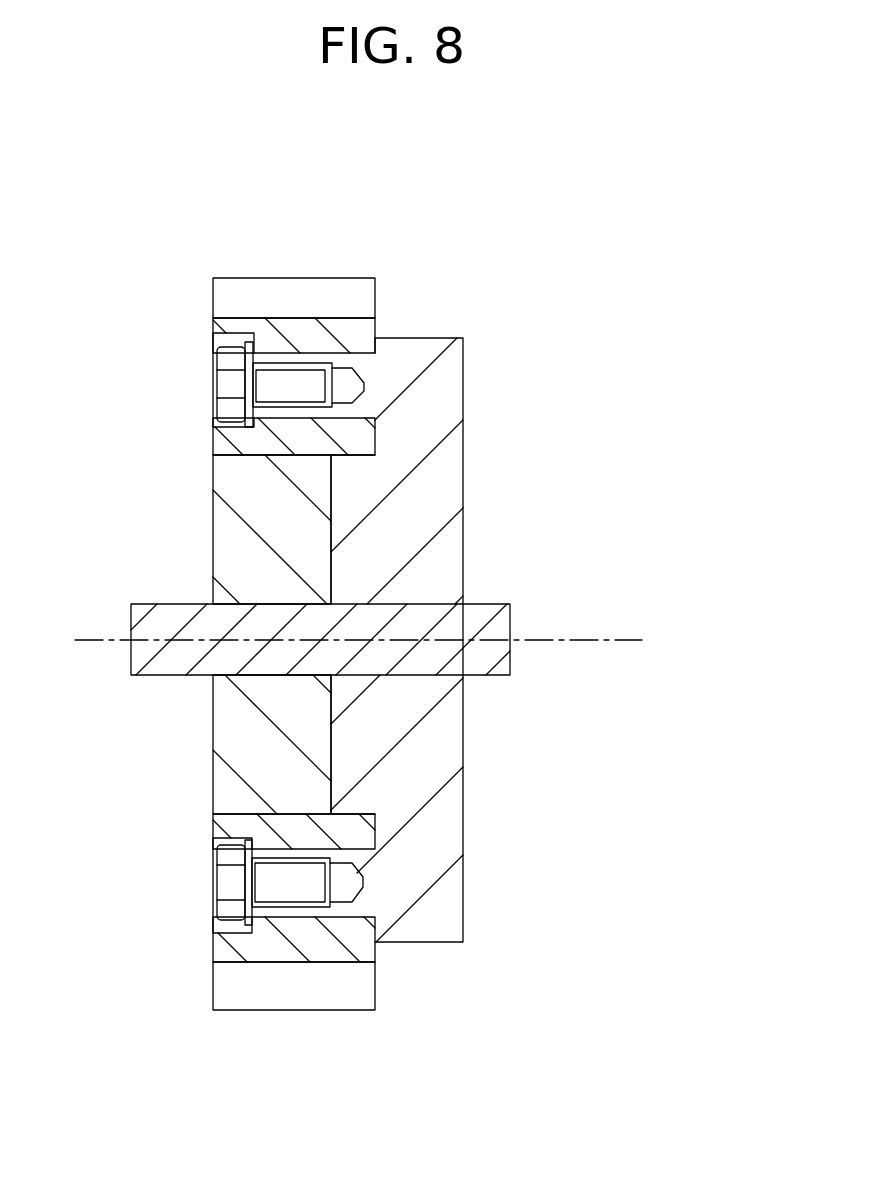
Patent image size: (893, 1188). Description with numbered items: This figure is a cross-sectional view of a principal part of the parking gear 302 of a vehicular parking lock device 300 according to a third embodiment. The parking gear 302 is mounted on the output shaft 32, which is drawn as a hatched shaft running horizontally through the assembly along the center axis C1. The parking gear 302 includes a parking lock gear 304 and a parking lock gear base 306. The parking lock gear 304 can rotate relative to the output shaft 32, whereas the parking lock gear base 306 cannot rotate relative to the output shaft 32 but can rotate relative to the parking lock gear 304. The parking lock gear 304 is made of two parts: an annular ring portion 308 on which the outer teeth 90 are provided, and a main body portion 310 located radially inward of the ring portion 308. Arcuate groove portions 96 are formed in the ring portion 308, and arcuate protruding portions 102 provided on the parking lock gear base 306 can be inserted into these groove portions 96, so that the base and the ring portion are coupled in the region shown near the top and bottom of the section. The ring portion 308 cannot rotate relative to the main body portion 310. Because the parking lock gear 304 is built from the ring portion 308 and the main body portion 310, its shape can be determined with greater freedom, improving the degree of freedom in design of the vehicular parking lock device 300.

The output shaft 32 is at (175, 655).
The outer teeth 90 is at (240, 292).
The arcuate groove portions 96 is at (355, 352).
The arcuate protruding portions 102 is at (305, 358).
The vehicular parking lock device 300 is at (570, 357).
The parking gear 302 is at (667, 487).
The parking lock gear 304 is at (137, 467).
The parking lock gear base 306 is at (487, 513).
The annular ring portion 308 is at (223, 442).
The main body portion 310 is at (223, 548).
The center axis C1 is at (595, 641).